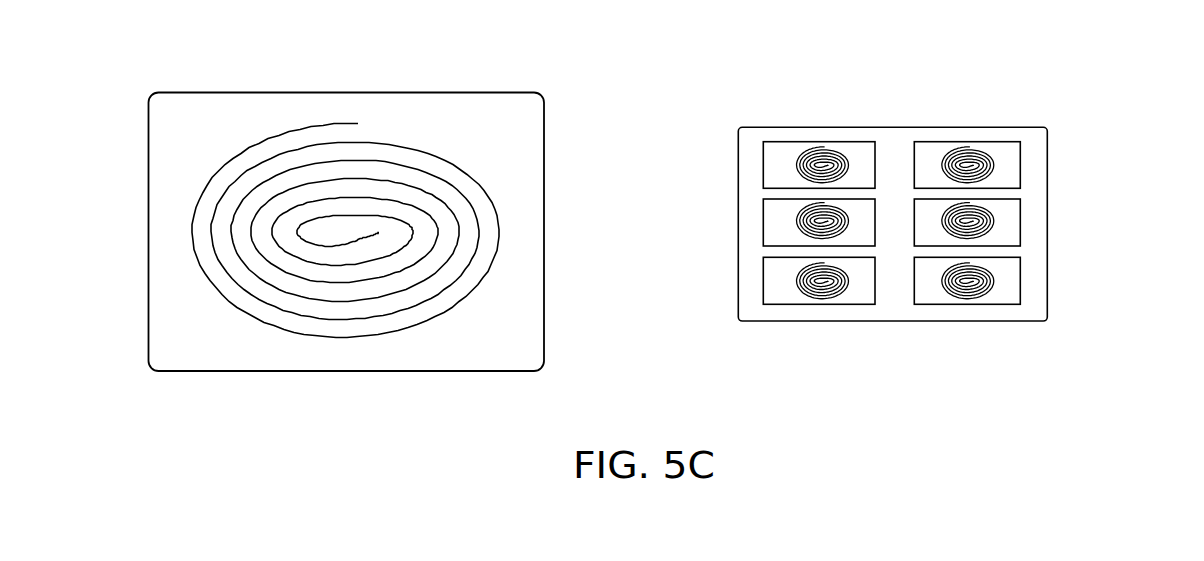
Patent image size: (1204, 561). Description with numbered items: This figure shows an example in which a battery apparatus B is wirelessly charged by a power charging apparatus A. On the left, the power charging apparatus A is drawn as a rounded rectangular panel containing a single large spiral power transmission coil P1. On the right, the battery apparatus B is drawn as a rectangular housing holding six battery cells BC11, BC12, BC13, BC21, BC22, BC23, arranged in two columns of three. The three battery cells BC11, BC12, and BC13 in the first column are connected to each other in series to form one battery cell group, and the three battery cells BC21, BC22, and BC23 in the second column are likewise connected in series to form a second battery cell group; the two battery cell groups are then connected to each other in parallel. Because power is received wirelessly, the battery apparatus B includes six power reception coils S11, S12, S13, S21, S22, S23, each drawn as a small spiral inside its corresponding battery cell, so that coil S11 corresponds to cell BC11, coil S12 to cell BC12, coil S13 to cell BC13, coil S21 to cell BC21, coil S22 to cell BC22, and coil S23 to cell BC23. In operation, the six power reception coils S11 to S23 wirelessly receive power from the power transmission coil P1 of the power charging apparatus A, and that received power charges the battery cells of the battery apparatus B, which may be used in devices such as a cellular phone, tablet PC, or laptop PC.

The power charging apparatus A is at (356, 92).
The battery apparatus B is at (892, 126).
The power transmission coil P1 is at (480, 186).
The power reception coil S11 is at (798, 155).
The power reception coil S12 is at (797, 215).
The power reception coil S13 is at (797, 272).
The power reception coil S21 is at (988, 155).
The power reception coil S22 is at (987, 214).
The power reception coil S23 is at (988, 273).
The battery cell BC11 is at (772, 173).
The battery cell BC12 is at (768, 235).
The battery cell BC13 is at (768, 293).
The battery cell BC21 is at (1015, 173).
The battery cell BC22 is at (1017, 235).
The battery cell BC23 is at (1017, 293).